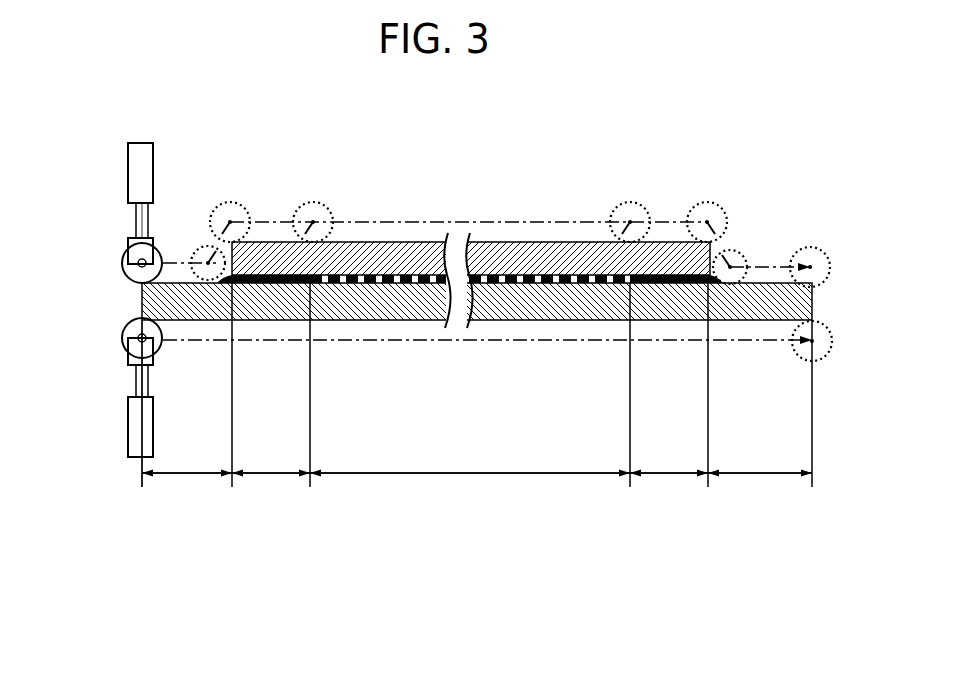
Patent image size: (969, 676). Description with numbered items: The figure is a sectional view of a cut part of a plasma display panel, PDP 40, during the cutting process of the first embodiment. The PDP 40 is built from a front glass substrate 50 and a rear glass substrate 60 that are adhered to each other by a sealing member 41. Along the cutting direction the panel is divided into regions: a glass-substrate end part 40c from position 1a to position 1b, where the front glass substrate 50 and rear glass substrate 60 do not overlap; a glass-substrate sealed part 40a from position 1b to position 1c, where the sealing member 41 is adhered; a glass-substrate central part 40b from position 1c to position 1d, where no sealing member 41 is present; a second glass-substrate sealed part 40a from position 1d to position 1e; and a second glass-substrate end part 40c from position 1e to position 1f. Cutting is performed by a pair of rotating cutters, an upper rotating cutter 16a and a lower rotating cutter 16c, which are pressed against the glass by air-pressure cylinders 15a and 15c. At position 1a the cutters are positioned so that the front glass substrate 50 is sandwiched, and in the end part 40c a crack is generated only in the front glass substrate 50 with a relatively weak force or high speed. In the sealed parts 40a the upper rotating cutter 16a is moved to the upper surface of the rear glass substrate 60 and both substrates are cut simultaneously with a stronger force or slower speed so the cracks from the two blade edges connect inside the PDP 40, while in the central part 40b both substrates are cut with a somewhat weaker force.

The air-pressure cylinder 15a is at (140, 178).
The upper rotating cutter 16a is at (122, 265).
The lower rotating cutter 16c is at (120, 335).
The air-pressure cylinder 15c is at (138, 420).
The PDP 40 is at (450, 141).
The sealing member 41 is at (272, 273).
The front glass substrate 50 is at (359, 300).
The rear glass substrate 60 is at (400, 258).
The position 1a is at (144, 420).
The position 1b is at (232, 402).
The position 1c is at (312, 402).
The position 1d is at (630, 402).
The position 1e is at (708, 402).
The position 1f is at (808, 420).
The glass-substrate sealed part 40a is at (270, 473).
The glass-substrate central part 40b is at (440, 473).
The glass-substrate end part 40c is at (192, 473).